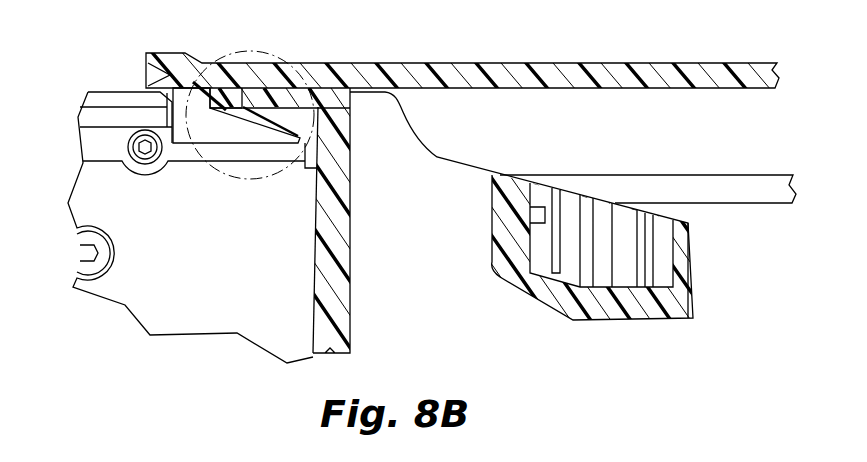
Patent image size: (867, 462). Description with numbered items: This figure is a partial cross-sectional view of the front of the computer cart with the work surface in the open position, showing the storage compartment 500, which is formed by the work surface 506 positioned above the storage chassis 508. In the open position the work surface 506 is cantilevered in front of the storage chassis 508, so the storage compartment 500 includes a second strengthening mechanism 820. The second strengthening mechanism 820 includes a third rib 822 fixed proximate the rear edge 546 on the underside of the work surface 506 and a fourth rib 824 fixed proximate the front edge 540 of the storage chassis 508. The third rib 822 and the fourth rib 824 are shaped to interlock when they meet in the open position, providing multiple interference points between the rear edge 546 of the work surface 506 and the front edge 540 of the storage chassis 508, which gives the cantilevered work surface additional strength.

The storage compartment 500 is at (178, 374).
The work surface 506 is at (420, 75).
The storage chassis 508 is at (343, 221).
The front edge 540 is at (333, 203).
The rear edge 546 is at (217, 68).
The second strengthening mechanism 820 is at (233, 170).
The third rib 822 is at (200, 127).
The fourth rib 824 is at (322, 112).